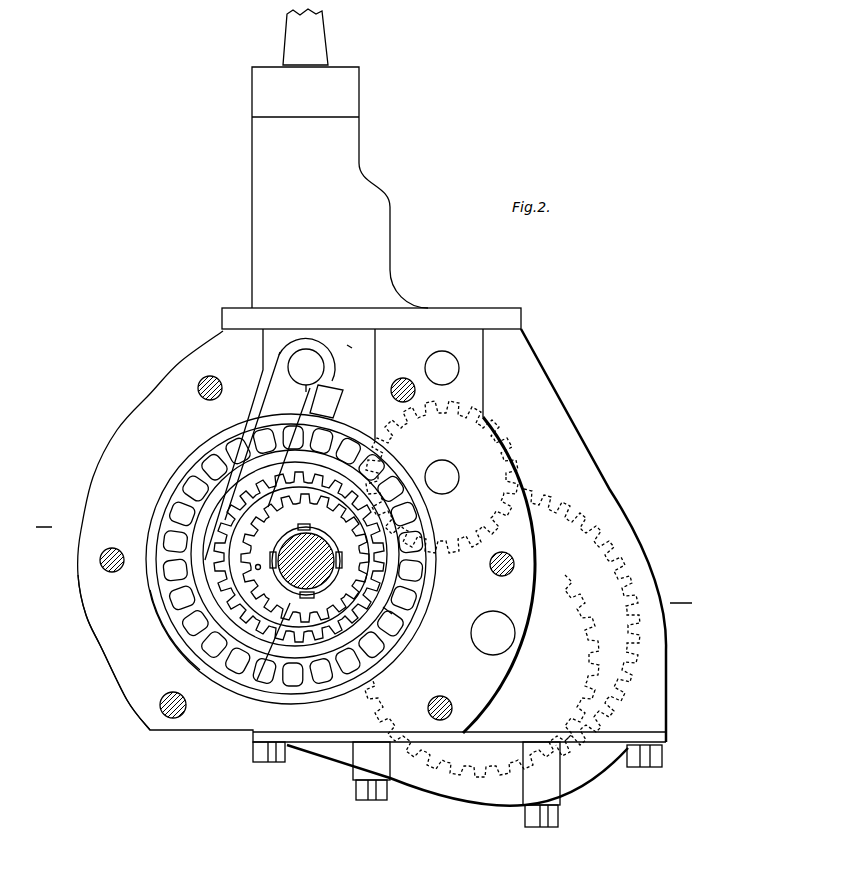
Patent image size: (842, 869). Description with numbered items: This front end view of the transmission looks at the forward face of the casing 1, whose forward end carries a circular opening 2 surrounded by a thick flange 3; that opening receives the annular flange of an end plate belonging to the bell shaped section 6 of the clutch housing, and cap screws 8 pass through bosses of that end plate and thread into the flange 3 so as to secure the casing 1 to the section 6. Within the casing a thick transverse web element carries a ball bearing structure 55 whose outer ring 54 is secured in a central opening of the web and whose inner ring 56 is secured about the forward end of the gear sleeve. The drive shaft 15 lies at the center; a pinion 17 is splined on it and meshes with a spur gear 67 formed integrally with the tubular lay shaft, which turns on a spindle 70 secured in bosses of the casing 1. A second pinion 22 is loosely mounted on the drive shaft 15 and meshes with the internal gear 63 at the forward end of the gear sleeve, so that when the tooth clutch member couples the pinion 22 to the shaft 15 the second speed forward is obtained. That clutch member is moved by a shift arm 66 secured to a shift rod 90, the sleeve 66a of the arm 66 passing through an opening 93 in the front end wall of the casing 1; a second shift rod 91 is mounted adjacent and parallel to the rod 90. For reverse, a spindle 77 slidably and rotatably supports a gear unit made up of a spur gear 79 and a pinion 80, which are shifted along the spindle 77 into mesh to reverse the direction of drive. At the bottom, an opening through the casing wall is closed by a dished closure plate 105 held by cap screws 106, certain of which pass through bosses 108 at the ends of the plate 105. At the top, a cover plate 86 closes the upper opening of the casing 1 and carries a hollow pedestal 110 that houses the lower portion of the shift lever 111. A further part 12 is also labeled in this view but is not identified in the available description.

The shift lever 111 is at (320, 45).
The hollow pedestal 110 is at (380, 242).
The cover plate 86 is at (512, 322).
The casing 1 is at (118, 437).
The bell shaped section of the clutch housing 6 is at (366, 564).
The thick flange 3 is at (96, 632).
The ball bearing structure 55 is at (170, 482).
The circular opening 2 is at (168, 624).
The outer ring 54 is at (193, 578).
The inner ring 56 is at (185, 602).
The second pinion 22 is at (307, 492).
The pinion 17 is at (289, 604).
The drive shaft 15 is at (307, 545).
The shift rod 90 is at (305, 349).
The shift arm 66 is at (262, 416).
The sleeve 66a is at (336, 377).
The opening 93 is at (350, 345).
The second shift rod 91 is at (436, 358).
The spindle 77 is at (441, 475).
The pinion 80 is at (500, 430).
The spur gear 79 is at (508, 457).
The gear 12 is at (482, 676).
The spindle 70 is at (492, 625).
The spur gear 67 is at (383, 607).
The internal gear 63 is at (257, 628).
The cap screws 8 is at (212, 376).
The closure plate 105 is at (487, 803).
The bosses 108 is at (390, 788).
The cap screws 106 is at (268, 762).